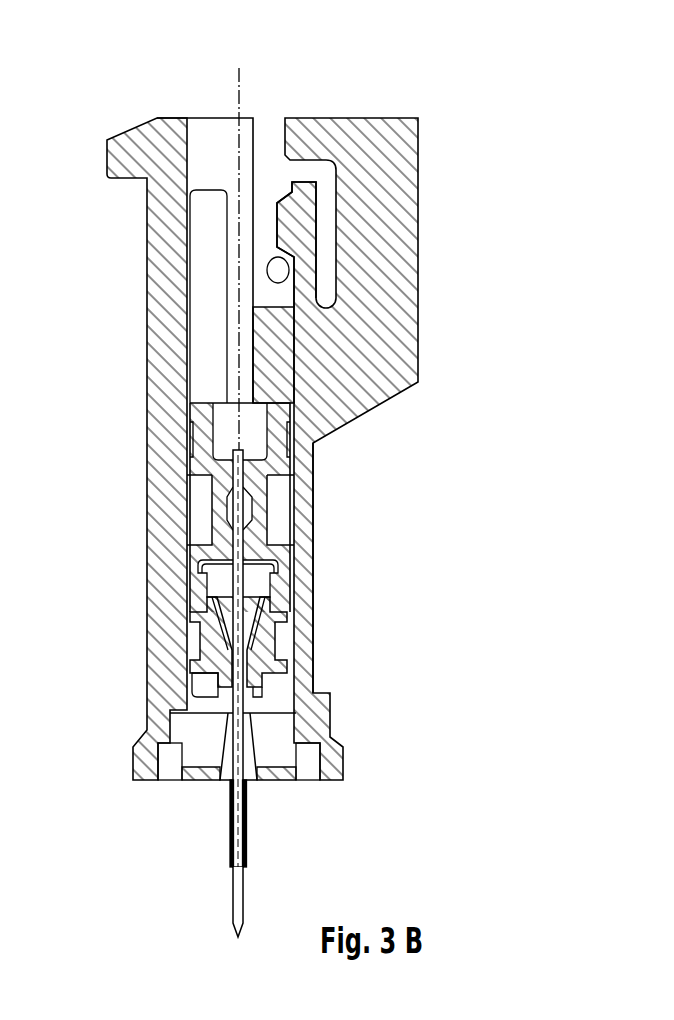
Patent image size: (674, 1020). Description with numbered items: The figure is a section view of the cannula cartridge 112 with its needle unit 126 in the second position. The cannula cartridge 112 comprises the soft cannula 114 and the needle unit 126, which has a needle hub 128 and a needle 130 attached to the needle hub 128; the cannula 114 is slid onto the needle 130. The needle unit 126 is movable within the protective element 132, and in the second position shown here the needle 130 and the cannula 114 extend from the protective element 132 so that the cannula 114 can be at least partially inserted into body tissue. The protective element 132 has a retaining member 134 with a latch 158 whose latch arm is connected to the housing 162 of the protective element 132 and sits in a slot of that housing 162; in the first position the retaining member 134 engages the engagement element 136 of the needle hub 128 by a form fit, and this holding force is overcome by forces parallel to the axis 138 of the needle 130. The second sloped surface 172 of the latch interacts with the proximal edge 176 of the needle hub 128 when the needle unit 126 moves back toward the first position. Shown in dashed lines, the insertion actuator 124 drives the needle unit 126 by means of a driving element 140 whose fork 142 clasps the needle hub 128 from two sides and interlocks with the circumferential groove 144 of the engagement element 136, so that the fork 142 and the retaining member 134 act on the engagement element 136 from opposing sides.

The cannula cartridge 112 is at (563, 190).
The cannula 114 is at (230, 820).
The insertion actuator 124 is at (138, 449).
The needle unit 126 is at (203, 723).
The needle hub 128 is at (187, 590).
The needle 130 is at (235, 893).
The protective element 132 is at (386, 568).
The retaining member 134 is at (402, 244).
The engagement element 136 is at (169, 507).
The axis 138 is at (240, 73).
The driving element 140 is at (138, 449).
The fork 142 is at (187, 547).
The circumferential groove 144 is at (207, 508).
The latch 158 is at (287, 222).
The housing 162 is at (307, 537).
The second sloped surface 172 is at (287, 281).
The proximal edge 176 is at (293, 400).